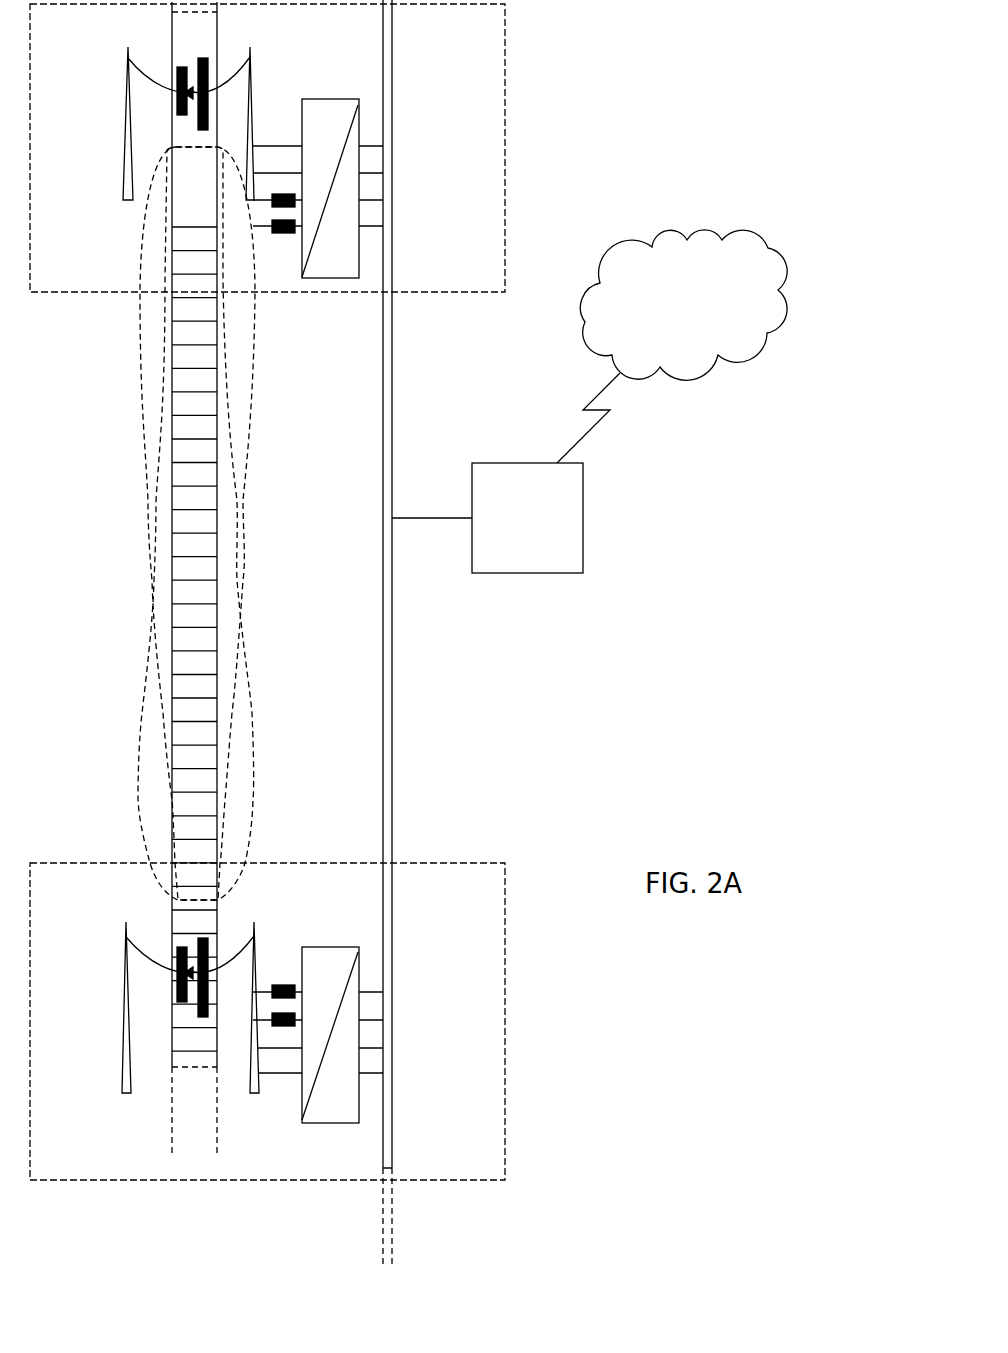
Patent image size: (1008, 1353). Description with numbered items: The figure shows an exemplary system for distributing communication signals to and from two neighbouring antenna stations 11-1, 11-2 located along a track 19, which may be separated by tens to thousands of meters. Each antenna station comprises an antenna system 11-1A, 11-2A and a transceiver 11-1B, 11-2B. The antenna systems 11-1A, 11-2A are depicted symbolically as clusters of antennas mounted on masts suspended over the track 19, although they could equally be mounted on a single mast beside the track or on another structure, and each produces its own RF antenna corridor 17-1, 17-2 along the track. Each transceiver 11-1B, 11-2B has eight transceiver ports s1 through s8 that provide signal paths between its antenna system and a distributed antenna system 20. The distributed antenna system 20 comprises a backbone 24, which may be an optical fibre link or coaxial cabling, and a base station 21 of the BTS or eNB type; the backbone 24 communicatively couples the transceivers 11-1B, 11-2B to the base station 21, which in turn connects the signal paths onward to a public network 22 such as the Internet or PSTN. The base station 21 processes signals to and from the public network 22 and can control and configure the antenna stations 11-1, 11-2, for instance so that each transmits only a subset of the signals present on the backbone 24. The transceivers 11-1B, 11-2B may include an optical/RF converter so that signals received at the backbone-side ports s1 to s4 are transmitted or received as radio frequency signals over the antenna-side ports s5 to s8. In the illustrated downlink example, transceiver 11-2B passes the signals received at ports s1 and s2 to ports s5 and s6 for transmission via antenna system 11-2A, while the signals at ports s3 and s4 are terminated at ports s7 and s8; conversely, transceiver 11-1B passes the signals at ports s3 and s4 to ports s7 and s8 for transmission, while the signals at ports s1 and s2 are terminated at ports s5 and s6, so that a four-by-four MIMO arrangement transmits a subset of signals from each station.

The antenna station 11-1 is at (505, 1168).
The antenna system 11-1A is at (181, 965).
The transceiver 11-1B is at (352, 1127).
The antenna station 11-2 is at (500, 66).
The antenna system 11-2A is at (181, 93).
The transceiver 11-2B is at (337, 99).
The RF antenna corridor 17-1 is at (248, 362).
The RF antenna corridor 17-2 is at (137, 745).
The track 19 is at (172, 497).
The distributed antenna system 20 is at (448, 746).
The base station 21 is at (546, 473).
The public network 22 is at (683, 305).
The backbone 24 is at (394, 704).
The transceiver port s1 is at (403, 966).
The transceiver port s2 is at (413, 1005).
The transceiver port s3 is at (414, 1057).
The transceiver port s4 is at (410, 1090).
The transceiver port s5 is at (274, 988).
The transceiver port s6 is at (299, 1016).
The transceiver port s7 is at (272, 202).
The transceiver port s8 is at (272, 230).